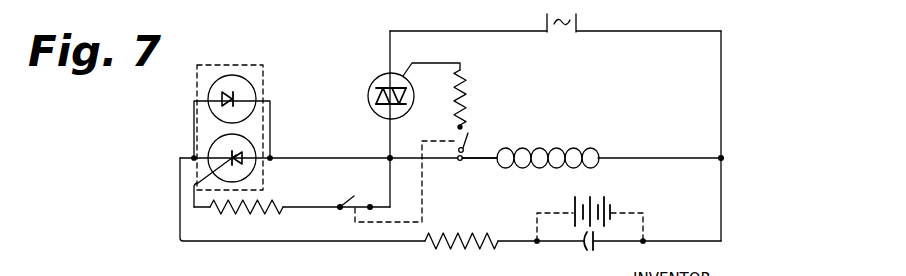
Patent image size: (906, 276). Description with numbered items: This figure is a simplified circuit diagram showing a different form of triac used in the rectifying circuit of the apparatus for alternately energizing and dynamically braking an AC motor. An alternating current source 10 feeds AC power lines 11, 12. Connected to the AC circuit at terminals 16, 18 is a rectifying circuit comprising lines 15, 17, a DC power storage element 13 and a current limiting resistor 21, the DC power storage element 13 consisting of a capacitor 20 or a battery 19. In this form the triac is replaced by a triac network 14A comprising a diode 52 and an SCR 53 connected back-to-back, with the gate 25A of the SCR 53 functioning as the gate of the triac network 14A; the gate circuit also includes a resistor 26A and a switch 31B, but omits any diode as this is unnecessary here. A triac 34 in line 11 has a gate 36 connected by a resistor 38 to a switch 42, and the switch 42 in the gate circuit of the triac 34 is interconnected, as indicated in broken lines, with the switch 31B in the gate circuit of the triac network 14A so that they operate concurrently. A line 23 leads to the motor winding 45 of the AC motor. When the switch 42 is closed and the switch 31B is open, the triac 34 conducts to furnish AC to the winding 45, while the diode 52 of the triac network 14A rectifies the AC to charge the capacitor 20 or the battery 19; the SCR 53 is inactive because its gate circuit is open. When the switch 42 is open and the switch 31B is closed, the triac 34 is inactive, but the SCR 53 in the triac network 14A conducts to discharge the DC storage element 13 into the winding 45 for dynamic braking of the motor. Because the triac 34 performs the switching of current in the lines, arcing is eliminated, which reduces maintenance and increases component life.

The alternating current source 10 is at (562, 32).
The AC power line 11 is at (388, 122).
The AC power line 12 is at (723, 81).
The DC power storage element 13 is at (565, 252).
The triac network 14A is at (198, 74).
The line 15 is at (180, 228).
The terminal 16 is at (388, 157).
The line 17 is at (723, 197).
The terminal 18 is at (723, 159).
The battery 19 is at (599, 198).
The capacitor 20 is at (598, 250).
The current limiting resistor 21 is at (445, 265).
The line 23 is at (477, 163).
The gate 25A is at (195, 184).
The resistor 26A is at (216, 213).
The switch 31B is at (350, 201).
The triac 34 is at (370, 86).
The gate 36 is at (407, 62).
The resistor 38 is at (466, 86).
The switch 42 is at (467, 138).
The motor winding 45 is at (542, 147).
The diode 52 is at (240, 76).
The SCR 53 is at (209, 147).